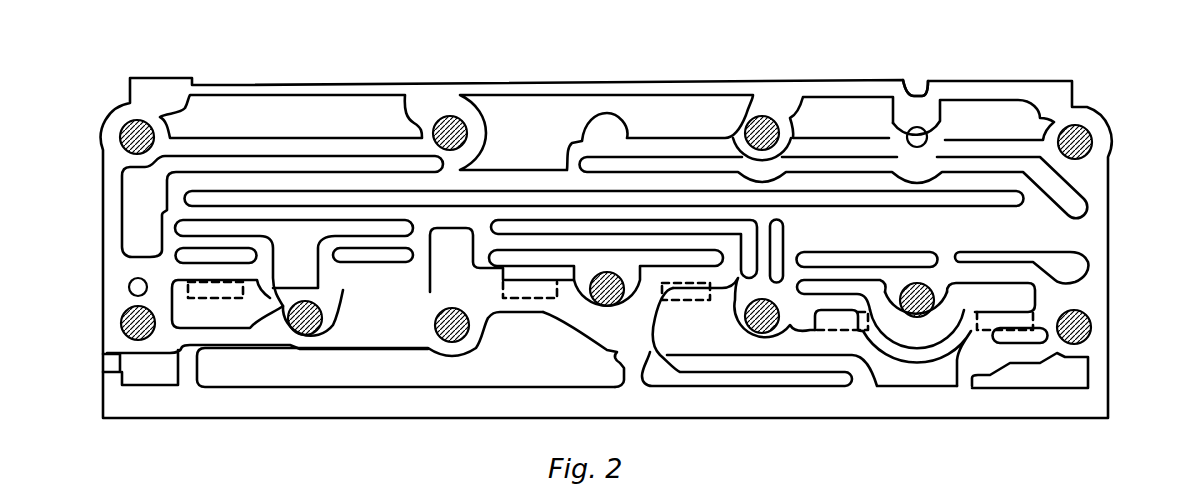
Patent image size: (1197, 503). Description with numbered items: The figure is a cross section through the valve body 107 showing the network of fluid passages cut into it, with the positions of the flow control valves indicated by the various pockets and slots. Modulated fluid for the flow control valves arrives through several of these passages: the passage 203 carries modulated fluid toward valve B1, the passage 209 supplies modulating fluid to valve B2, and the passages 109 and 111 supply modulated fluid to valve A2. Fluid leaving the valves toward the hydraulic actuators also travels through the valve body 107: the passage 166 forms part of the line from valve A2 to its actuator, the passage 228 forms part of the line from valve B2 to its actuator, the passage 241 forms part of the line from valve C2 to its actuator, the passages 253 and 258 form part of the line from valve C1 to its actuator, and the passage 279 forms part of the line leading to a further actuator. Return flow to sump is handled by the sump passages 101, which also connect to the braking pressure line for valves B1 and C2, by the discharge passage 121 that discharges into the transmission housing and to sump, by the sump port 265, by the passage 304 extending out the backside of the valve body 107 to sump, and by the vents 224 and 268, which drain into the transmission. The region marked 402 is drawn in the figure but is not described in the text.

The valve body 107 is at (606, 248).
The passage 109 is at (330, 160).
The passage 111 is at (670, 230).
The discharge passage 121 is at (928, 80).
The passage 258 is at (1063, 185).
The passage 203 is at (645, 222).
The passage 253 is at (565, 252).
The passage 279 is at (188, 255).
The passage 241 is at (1082, 272).
The passage 228 is at (403, 257).
The vent 268 is at (197, 290).
The pocket 402 is at (920, 267).
The sump passage 101 is at (1033, 300).
The sump port 265 is at (513, 297).
The vent 224 is at (692, 295).
The passage 304 is at (790, 338).
The passage 166 is at (593, 328).
The passage 209 is at (363, 330).